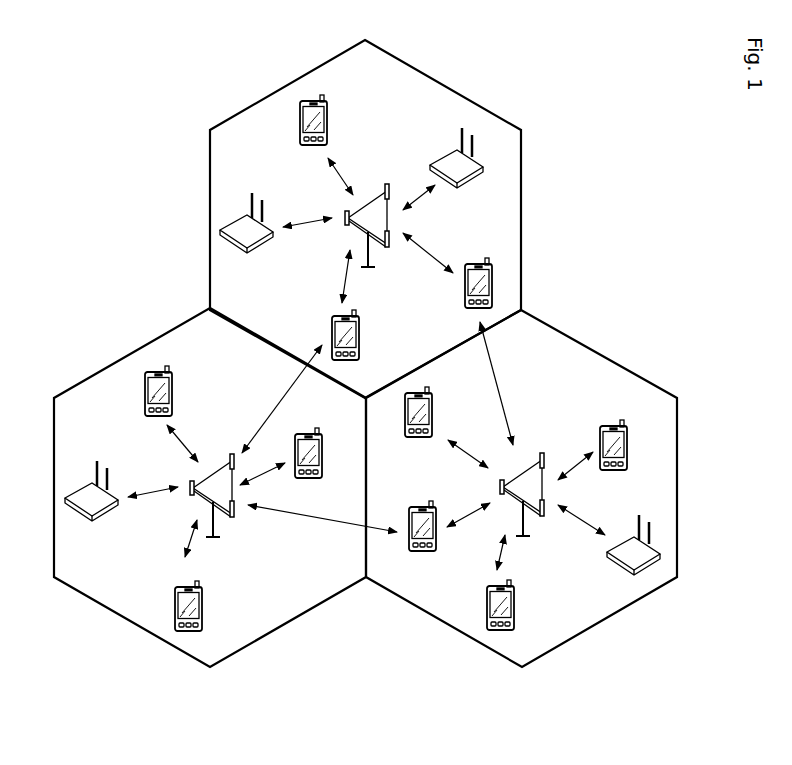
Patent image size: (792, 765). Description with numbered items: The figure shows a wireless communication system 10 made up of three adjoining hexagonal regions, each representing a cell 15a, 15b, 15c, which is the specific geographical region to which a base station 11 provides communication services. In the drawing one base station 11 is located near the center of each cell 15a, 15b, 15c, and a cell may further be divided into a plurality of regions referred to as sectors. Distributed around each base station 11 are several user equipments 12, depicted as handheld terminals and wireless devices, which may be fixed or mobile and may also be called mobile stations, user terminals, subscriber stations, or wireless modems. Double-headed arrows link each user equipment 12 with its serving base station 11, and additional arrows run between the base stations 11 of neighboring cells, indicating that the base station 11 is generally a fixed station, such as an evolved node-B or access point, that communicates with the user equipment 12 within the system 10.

The wireless communication system 10 is at (365, 353).
The base station 11 is at (380, 205).
The user equipment 12 is at (328, 122).
The cell 15a is at (521, 207).
The cell 15b is at (618, 362).
The cell 15c is at (110, 363).